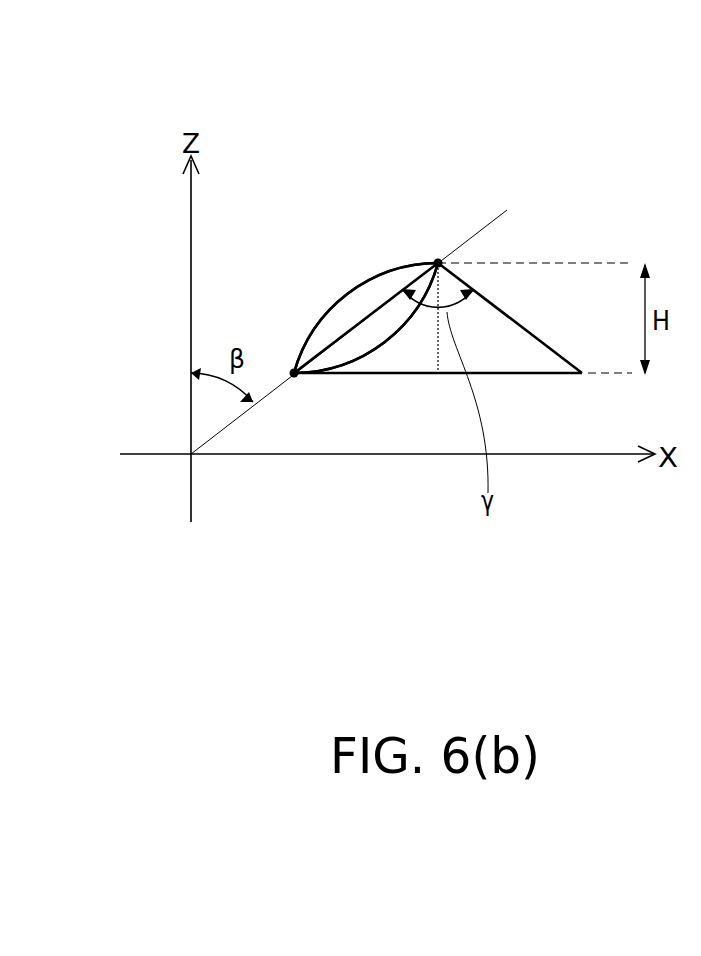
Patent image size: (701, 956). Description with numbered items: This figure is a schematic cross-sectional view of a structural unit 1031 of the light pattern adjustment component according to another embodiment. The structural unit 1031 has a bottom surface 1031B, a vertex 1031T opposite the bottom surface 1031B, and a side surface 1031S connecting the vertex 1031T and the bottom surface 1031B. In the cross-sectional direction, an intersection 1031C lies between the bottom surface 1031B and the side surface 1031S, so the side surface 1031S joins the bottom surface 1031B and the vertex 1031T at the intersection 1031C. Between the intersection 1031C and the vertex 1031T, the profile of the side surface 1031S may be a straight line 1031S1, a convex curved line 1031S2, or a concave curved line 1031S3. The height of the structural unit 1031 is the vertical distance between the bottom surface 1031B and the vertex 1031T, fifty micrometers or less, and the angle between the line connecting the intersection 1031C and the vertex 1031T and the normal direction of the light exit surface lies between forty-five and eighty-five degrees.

The structural unit 1031 is at (512, 341).
The bottom surface 1031B is at (520, 375).
The intersection 1031C is at (295, 380).
The vertex 1031T is at (437, 260).
The side surface 1031S is at (354, 289).
The straight line 1031S1 is at (342, 335).
The convex curved line 1031S2 is at (328, 305).
The concave curved line 1031S3 is at (385, 345).